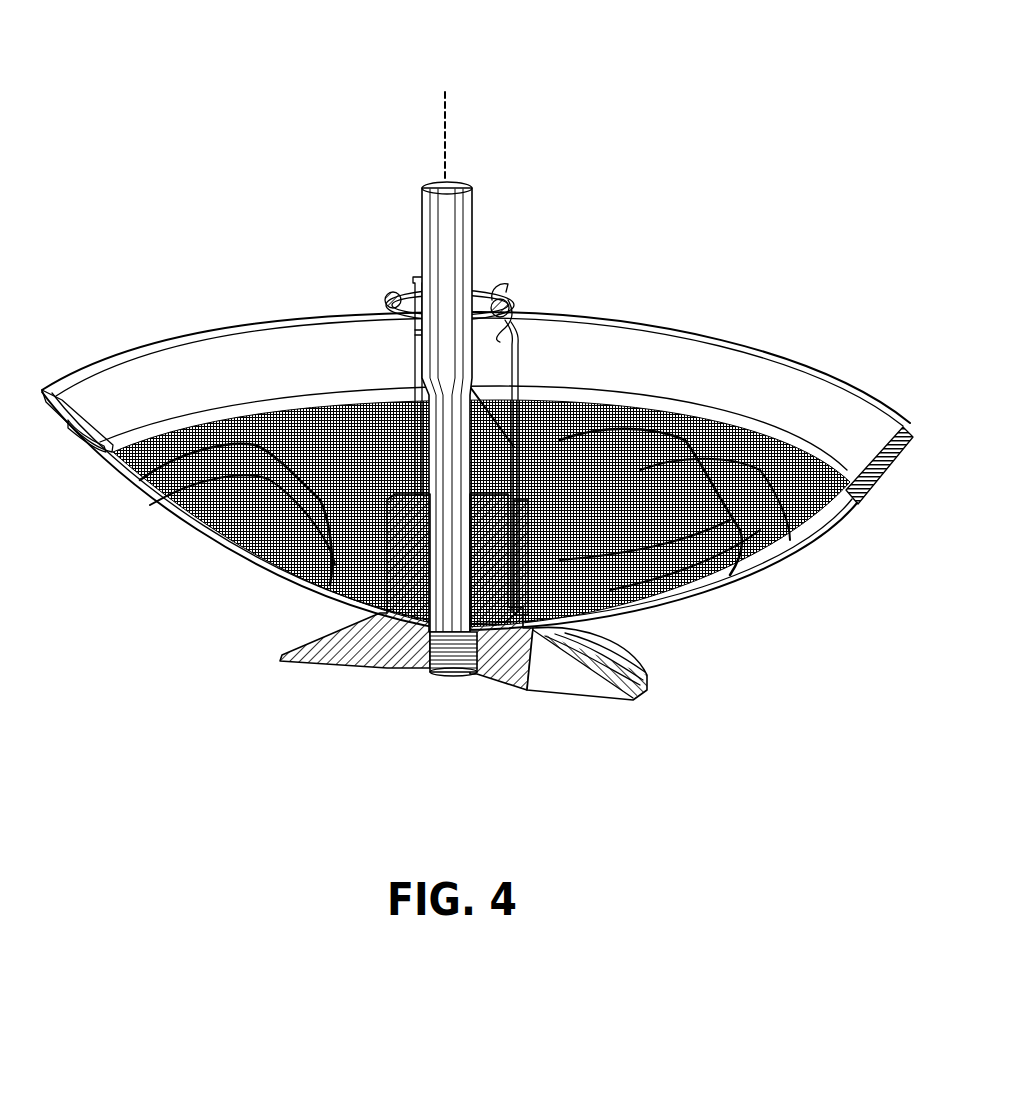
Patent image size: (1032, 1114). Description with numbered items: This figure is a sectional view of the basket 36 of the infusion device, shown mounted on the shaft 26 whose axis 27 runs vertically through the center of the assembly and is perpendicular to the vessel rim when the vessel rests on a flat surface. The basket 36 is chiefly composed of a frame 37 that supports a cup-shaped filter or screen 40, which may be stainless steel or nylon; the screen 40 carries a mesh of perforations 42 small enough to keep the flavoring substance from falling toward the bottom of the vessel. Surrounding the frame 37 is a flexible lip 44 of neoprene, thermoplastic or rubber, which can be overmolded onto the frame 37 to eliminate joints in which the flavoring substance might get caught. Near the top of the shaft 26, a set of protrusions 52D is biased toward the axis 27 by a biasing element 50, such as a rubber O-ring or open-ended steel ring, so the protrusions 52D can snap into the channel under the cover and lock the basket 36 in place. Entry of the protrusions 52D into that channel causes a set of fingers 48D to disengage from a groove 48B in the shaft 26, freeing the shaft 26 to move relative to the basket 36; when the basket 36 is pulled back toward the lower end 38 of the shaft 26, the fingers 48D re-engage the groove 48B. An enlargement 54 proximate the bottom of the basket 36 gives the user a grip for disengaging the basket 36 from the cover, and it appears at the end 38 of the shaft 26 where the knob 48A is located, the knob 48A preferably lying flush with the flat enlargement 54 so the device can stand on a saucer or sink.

The basket 36 is at (677, 120).
The axis 27 is at (452, 124).
The shaft 26 is at (455, 230).
The biasing element 50 is at (383, 298).
The protrusions 52D is at (507, 285).
The groove 48B is at (438, 387).
The fingers 48D is at (490, 410).
The perforations 42 is at (217, 493).
The screen 40 is at (258, 530).
The frame 37 is at (328, 532).
The lip 44 is at (894, 477).
The knob 48A is at (412, 666).
The end 38 is at (452, 686).
The enlargement 54 is at (565, 688).